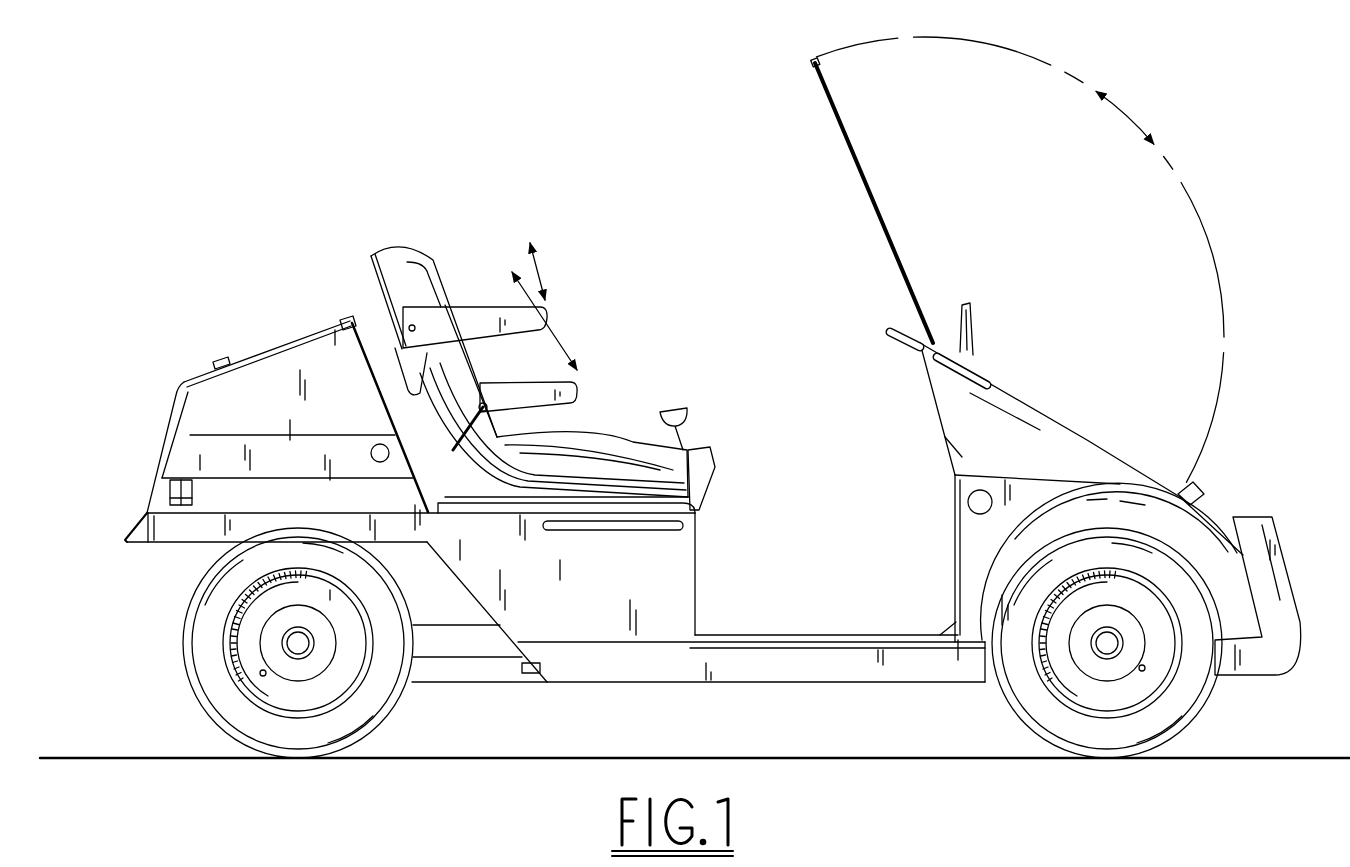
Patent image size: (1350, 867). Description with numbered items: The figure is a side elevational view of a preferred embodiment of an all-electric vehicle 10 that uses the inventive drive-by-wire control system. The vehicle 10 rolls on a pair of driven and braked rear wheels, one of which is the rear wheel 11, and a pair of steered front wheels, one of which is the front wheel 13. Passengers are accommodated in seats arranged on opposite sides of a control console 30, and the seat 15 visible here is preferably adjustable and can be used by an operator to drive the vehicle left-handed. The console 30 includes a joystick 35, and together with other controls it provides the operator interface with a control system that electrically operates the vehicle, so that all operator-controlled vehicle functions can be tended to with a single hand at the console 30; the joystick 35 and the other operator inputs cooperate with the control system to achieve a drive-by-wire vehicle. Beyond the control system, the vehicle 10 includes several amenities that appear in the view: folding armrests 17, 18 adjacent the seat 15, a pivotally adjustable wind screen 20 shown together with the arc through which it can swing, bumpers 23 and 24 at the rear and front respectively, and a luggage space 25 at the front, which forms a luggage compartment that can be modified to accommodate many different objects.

The vehicle 10 is at (402, 153).
The rear wheel 11 is at (372, 708).
The front wheel 13 is at (1030, 697).
The seat 15 is at (415, 255).
The folding armrest 17 is at (482, 310).
The folding armrest 18 is at (538, 385).
The wind screen 20 is at (843, 130).
The bumper 23 is at (1285, 585).
The bumper 24 is at (128, 538).
The luggage space 25 is at (278, 345).
The control console 30 is at (717, 453).
The joystick 35 is at (680, 411).